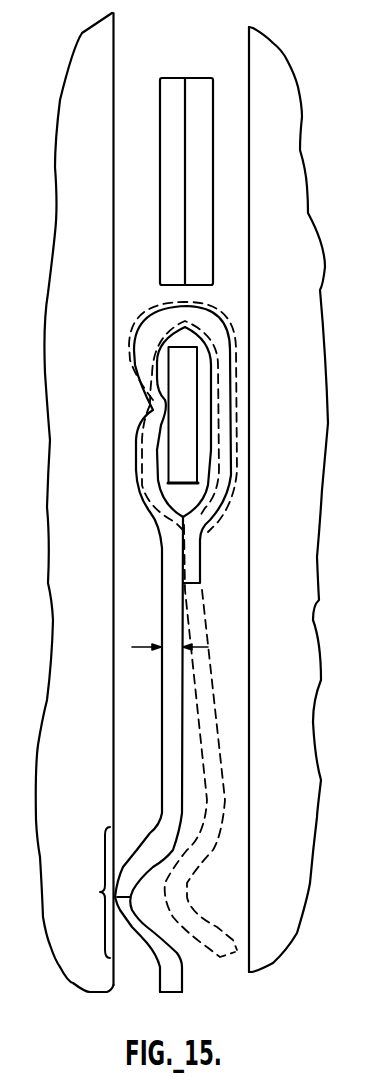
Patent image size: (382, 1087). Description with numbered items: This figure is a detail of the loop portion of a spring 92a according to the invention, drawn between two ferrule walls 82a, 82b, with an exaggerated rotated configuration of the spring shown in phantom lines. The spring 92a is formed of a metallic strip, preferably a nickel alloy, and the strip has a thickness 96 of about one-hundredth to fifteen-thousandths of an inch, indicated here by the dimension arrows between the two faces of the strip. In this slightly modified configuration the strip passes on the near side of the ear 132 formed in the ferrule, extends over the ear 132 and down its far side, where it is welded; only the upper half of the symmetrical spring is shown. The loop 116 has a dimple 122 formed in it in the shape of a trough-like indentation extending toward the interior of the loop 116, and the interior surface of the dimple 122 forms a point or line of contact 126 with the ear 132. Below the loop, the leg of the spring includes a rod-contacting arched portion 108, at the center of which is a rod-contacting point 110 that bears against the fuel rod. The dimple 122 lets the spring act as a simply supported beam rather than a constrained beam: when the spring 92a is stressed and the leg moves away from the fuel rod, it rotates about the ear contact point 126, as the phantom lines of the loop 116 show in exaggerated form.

The first housing wall 82a is at (105, 48).
The second housing wall 82b is at (285, 82).
The spring 92a is at (172, 700).
The thickness 96 is at (172, 647).
The rod-contacting arched portion 108 is at (91, 892).
The rod-contacting point 110 is at (130, 897).
The loop 116 is at (233, 473).
The dimple 122 is at (153, 410).
The contact point 126 is at (168, 407).
The ear 132 is at (185, 420).